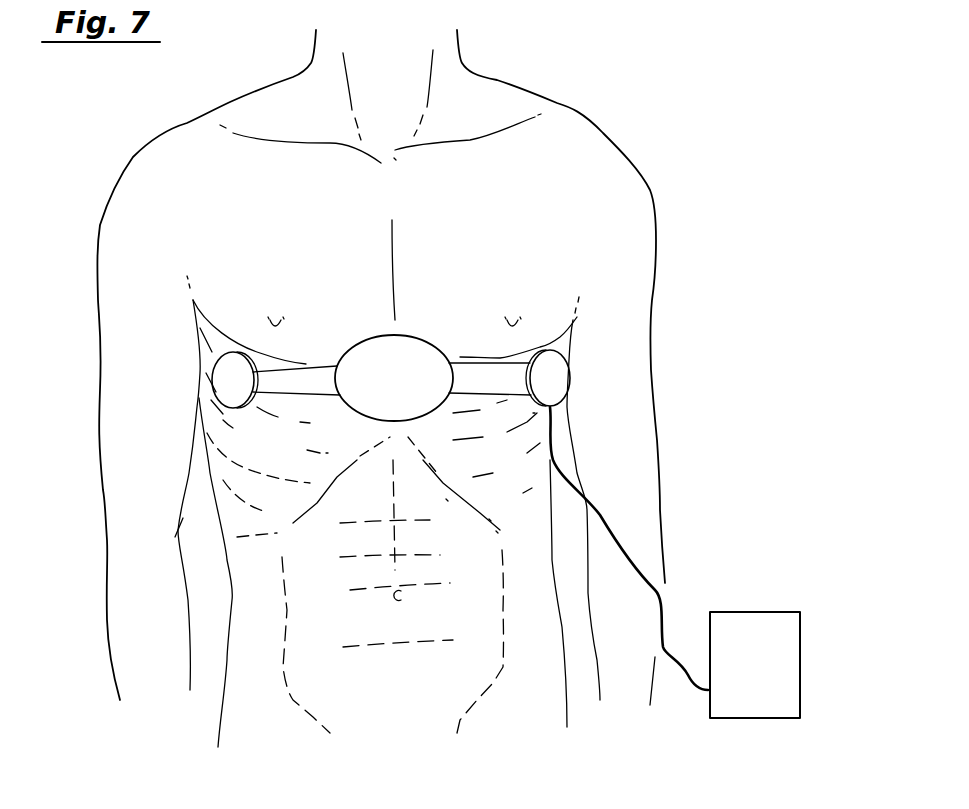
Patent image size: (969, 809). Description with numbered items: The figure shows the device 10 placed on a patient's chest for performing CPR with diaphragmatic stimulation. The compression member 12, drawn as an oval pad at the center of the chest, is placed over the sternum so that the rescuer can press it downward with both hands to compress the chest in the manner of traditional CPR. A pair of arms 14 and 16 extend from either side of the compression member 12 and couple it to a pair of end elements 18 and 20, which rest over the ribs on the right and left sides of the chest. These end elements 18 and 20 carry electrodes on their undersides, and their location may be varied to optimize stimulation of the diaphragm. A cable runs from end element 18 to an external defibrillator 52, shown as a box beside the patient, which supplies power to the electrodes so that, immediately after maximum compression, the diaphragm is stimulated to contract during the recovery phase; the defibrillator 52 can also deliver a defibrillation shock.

The device 10 is at (423, 356).
The compression member 12 is at (402, 363).
The arm 14 is at (483, 383).
The arm 16 is at (295, 383).
The end element 18 is at (560, 383).
The end element 20 is at (233, 378).
The external defibrillator 52 is at (757, 612).